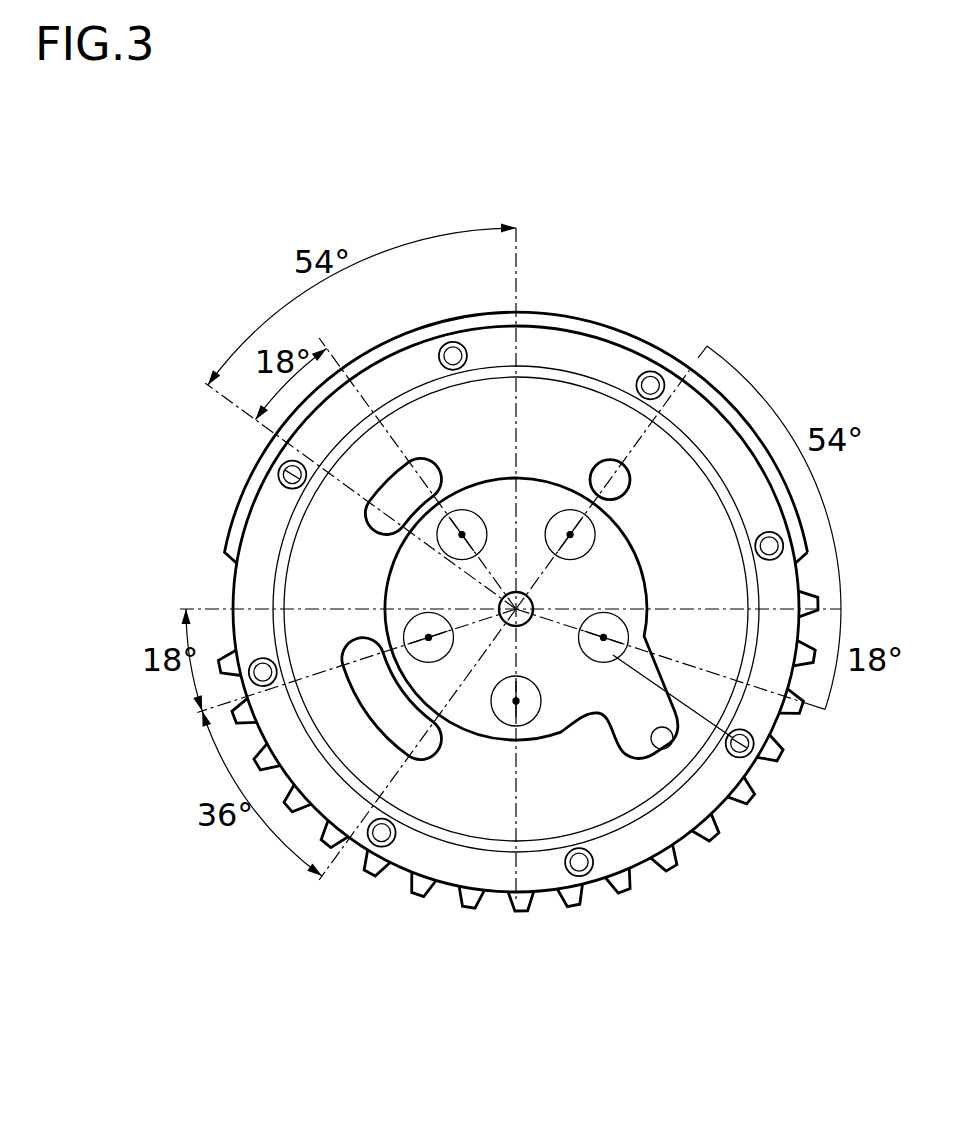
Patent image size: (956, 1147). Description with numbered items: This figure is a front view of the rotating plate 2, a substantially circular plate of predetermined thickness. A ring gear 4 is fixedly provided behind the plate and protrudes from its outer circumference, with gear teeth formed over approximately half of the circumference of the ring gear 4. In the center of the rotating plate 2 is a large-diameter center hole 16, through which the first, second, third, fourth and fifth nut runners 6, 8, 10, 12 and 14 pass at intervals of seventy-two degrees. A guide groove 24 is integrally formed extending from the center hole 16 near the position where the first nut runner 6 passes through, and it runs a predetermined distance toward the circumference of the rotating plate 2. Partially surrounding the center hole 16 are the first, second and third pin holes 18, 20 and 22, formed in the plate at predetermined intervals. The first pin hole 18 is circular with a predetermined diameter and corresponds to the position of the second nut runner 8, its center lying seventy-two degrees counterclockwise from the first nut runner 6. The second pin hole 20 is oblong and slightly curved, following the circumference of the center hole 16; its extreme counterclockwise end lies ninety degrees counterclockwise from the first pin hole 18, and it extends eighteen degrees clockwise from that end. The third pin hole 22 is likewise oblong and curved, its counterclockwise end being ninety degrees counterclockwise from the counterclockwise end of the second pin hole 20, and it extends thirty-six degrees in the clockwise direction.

The rotating plate 2 is at (812, 531).
The ring gear 4 is at (663, 864).
The first nut runner 6 is at (745, 750).
The second nut runner 8 is at (593, 530).
The third nut runner 10 is at (460, 510).
The fourth nut runner 12 is at (403, 633).
The fifth nut runner 14 is at (507, 722).
The center hole 16 is at (558, 733).
The first pin hole 18 is at (612, 461).
The second pin hole 20 is at (373, 515).
The third pin hole 22 is at (428, 757).
The guide groove 24 is at (655, 745).